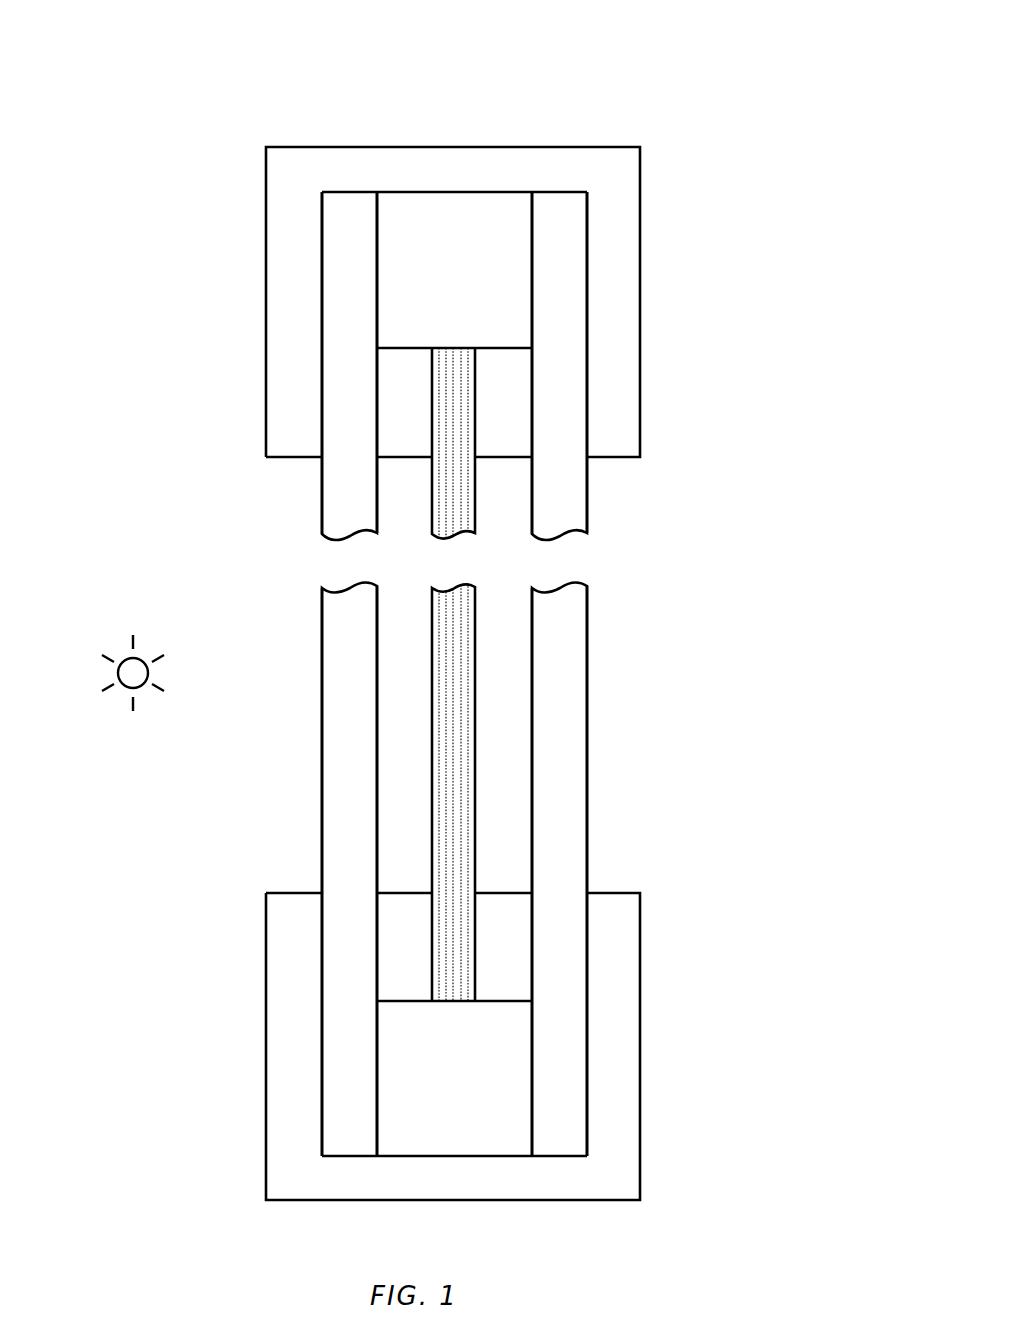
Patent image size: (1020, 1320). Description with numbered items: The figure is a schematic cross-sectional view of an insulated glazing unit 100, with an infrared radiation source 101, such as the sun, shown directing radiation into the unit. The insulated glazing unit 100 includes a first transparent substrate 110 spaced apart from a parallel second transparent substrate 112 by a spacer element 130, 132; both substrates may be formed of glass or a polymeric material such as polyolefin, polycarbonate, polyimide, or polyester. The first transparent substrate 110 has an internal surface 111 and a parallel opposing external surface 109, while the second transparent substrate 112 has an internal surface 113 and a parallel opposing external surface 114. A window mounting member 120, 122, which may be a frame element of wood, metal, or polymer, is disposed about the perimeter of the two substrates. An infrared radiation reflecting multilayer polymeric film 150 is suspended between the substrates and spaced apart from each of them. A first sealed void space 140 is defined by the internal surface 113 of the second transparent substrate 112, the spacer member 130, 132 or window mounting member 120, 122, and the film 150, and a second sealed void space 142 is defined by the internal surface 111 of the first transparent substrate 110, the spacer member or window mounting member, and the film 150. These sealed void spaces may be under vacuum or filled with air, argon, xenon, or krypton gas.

The insulated glazing unit 100 is at (628, 50).
The infrared radiation source 101 is at (123, 660).
The external surface 109 is at (587, 775).
The first transparent substrate 110 is at (572, 840).
The internal surface 111 is at (530, 603).
The second transparent substrate 112 is at (335, 818).
The internal surface 113 is at (378, 610).
The external surface 114 is at (322, 735).
The window mounting member 120 is at (622, 1045).
The window mounting member 122 is at (620, 235).
The spacer element 130 is at (513, 947).
The spacer element 132 is at (510, 407).
The first sealed void space 140 is at (398, 665).
The second sealed void space 142 is at (512, 700).
The infrared radiation reflecting multilayer polymeric film 150 is at (477, 650).